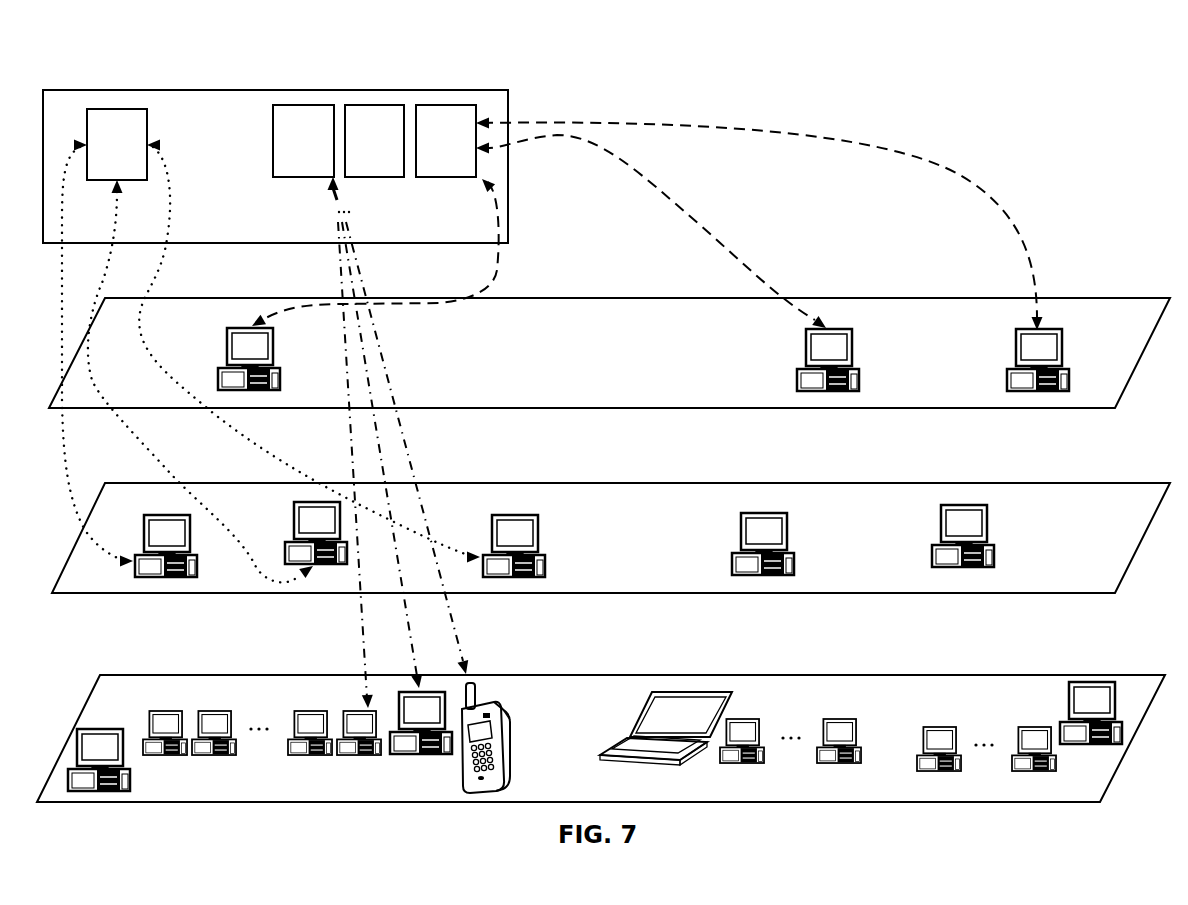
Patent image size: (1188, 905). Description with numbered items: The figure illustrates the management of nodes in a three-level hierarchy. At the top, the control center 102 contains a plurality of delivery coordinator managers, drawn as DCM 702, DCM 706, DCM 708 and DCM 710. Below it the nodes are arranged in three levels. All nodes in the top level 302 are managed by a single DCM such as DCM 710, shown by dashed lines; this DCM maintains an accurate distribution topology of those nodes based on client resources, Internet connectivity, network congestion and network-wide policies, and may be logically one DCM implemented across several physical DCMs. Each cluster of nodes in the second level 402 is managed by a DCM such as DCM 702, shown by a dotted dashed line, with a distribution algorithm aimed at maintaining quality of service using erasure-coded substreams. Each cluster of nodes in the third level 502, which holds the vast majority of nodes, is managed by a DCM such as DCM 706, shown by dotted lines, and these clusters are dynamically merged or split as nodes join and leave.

The control center 102 is at (508, 110).
The DCM 702 is at (107, 109).
The DCM 706 is at (292, 177).
The DCM 708 is at (366, 177).
The DCM 710 is at (440, 177).
The top level 302 is at (472, 408).
The second level 402 is at (480, 593).
The third level 502 is at (157, 675).